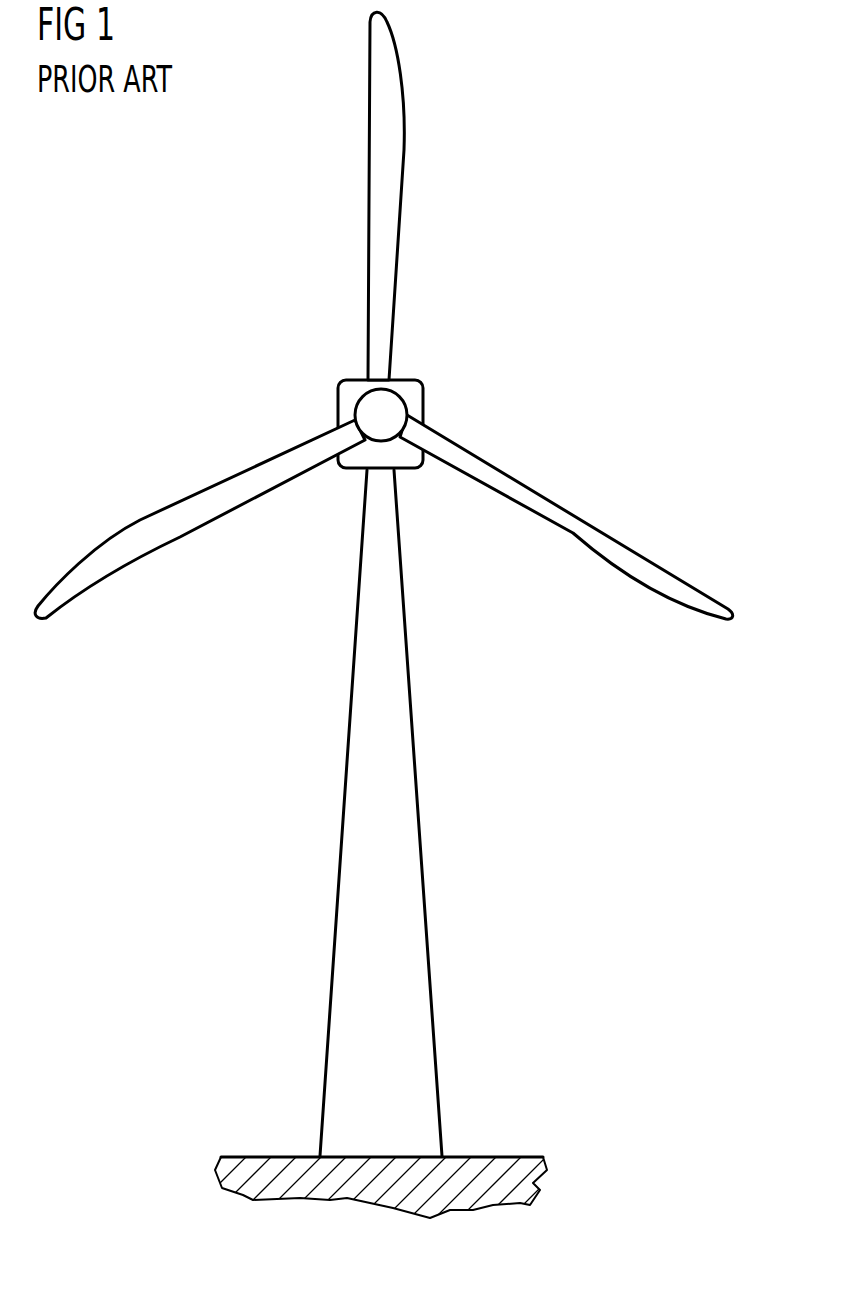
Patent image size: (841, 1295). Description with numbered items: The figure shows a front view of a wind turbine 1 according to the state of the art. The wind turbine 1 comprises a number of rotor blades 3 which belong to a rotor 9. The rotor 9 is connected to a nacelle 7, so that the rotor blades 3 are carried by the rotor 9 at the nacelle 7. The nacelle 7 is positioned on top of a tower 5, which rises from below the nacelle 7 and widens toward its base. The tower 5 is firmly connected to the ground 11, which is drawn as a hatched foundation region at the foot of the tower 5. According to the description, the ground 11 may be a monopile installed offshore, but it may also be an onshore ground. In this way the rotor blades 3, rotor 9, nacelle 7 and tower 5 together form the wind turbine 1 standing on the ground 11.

The wind turbine 1 is at (610, 287).
The rotor blades 3 is at (383, 258).
The tower 5 is at (417, 887).
The nacelle 7 is at (405, 387).
The rotor 9 is at (308, 373).
The ground 11 is at (510, 1153).